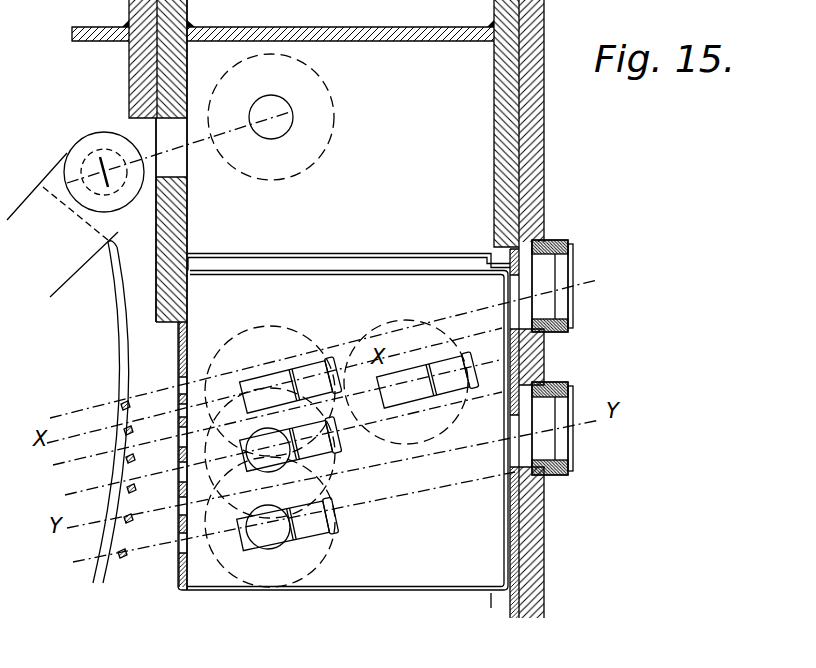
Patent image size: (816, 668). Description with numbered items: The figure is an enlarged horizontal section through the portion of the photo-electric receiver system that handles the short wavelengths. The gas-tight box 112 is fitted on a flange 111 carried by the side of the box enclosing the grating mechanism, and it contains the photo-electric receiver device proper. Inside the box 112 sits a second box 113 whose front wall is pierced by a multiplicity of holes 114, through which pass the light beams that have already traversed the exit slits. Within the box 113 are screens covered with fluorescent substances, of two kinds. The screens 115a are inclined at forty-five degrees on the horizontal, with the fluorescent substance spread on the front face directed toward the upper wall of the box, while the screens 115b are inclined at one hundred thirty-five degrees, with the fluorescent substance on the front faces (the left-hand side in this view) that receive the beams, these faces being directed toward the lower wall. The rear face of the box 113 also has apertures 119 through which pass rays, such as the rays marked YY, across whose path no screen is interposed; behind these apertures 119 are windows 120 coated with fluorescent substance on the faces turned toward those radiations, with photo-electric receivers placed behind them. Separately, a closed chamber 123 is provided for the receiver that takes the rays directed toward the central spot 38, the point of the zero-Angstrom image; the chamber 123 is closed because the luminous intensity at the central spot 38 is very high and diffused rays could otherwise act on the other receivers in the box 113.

The flange 111 is at (145, 22).
The box 112 is at (328, 35).
The closed chamber 123 is at (444, 126).
The central spot 38 is at (99, 165).
The holes 114 is at (182, 386).
The box 113 is at (383, 540).
The screen 115a is at (265, 535).
The screen 115b is at (307, 452).
The aperture 119 is at (520, 445).
The window 120 is at (572, 449).